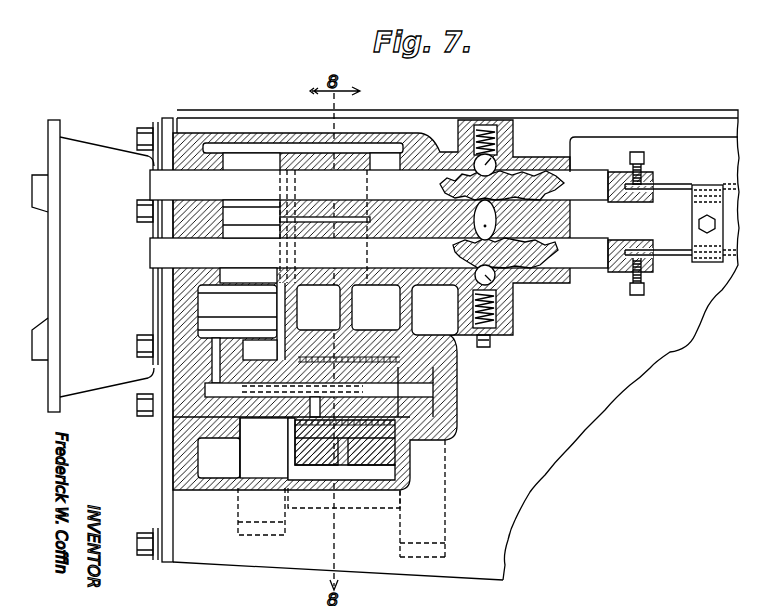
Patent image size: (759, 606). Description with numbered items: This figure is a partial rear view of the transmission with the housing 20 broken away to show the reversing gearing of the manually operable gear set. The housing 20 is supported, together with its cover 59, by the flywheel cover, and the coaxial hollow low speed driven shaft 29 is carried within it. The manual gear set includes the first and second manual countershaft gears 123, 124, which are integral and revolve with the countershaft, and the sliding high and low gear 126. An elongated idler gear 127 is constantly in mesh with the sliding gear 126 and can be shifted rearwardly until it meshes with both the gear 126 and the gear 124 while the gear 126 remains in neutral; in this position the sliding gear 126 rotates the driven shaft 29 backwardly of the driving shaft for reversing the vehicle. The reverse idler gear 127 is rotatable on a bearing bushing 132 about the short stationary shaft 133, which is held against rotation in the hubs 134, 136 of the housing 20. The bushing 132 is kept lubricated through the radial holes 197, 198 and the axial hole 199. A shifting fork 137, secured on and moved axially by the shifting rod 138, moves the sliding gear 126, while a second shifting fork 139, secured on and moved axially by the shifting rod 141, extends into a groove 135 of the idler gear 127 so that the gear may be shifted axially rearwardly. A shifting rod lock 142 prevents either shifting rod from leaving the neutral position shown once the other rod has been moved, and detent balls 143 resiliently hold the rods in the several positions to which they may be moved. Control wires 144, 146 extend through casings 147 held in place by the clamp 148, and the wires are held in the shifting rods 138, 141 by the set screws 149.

The housing 20 is at (757, 362).
The low speed driven shaft 29 is at (256, 344).
The cover 59 is at (604, 111).
The first manual countershaft gear 123 is at (445, 548).
The second manual countershaft gear 124 is at (252, 533).
The sliding high and low gear 126 is at (280, 291).
The elongated idler gear 127 is at (363, 458).
The bearing bushing 132 is at (252, 425).
The short stationary shaft 133 is at (264, 448).
The hub 134 is at (222, 433).
The groove 135 is at (342, 468).
The hub 136 is at (431, 441).
The shifting fork 137 is at (303, 294).
The shifting rod 138 is at (172, 186).
The second shifting fork 139 is at (355, 300).
The shifting rod 141 is at (190, 248).
The shifting rod lock 142 is at (478, 220).
The detent balls 143 is at (475, 160).
The control wire 144 is at (668, 191).
The control wire 146 is at (666, 251).
The casing 147 is at (722, 268).
The clamp 148 is at (713, 185).
The set screw 149 is at (633, 160).
The radial hole 197 is at (214, 352).
The radial hole 198 is at (312, 458).
The axial hole 199 is at (435, 390).